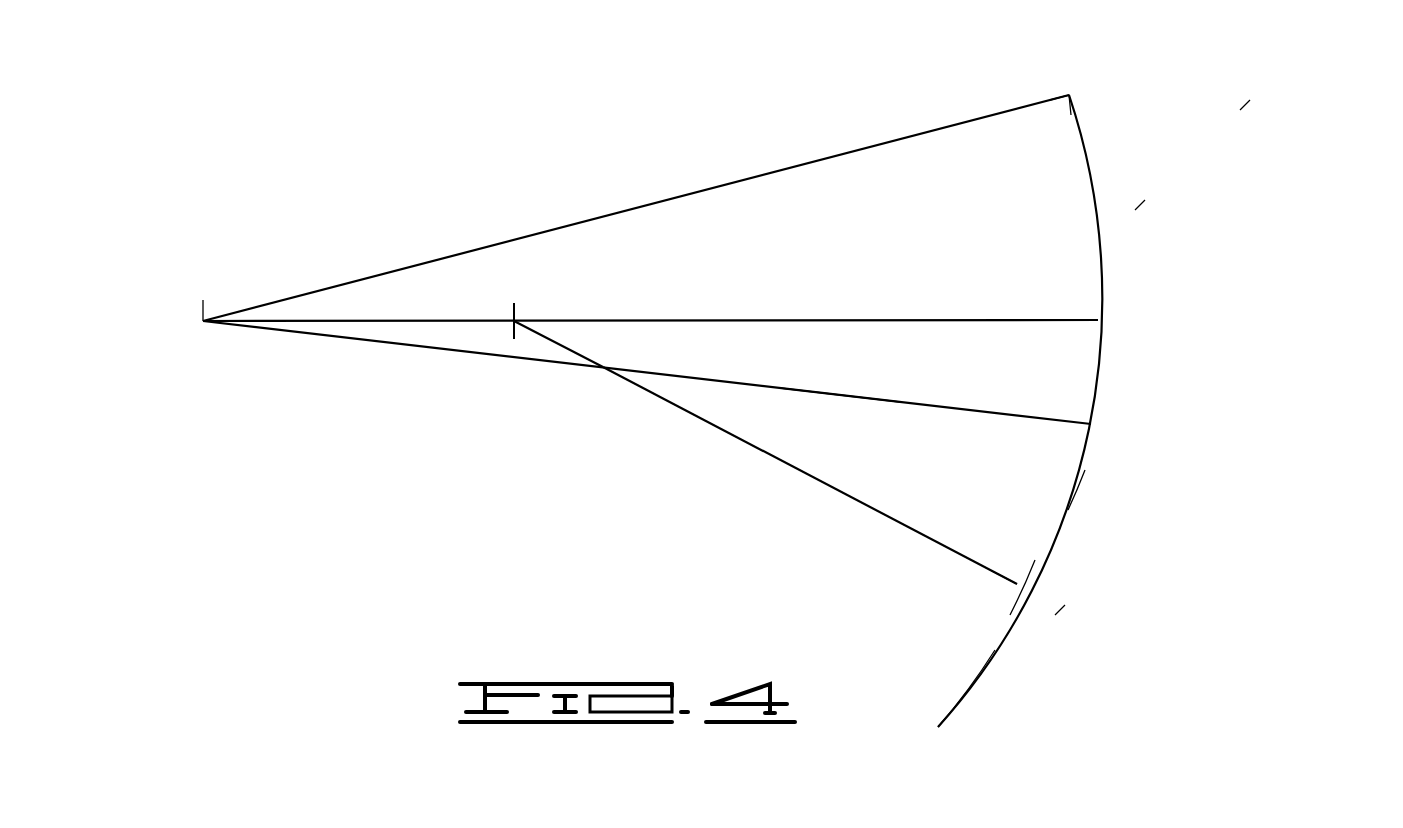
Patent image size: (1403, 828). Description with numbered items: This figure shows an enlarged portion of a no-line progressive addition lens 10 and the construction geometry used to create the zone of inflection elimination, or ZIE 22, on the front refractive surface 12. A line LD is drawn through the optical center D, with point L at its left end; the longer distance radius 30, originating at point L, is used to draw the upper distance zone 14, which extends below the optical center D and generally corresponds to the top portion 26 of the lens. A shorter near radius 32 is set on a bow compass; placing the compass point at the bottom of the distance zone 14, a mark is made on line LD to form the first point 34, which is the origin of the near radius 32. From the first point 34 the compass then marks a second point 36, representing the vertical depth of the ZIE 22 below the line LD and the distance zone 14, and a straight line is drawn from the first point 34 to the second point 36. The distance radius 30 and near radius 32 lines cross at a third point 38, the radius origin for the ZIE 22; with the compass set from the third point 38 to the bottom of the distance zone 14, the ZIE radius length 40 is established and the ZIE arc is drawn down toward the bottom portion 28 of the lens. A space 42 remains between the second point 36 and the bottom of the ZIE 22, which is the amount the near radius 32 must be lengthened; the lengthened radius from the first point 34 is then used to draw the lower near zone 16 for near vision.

The lens 10 is at (1248, 105).
The front refractive surface 12 is at (1143, 203).
The distance zone 14 is at (1083, 150).
The near zone 16 is at (982, 677).
The zone of inflection elimination 22 is at (1077, 490).
The top portion 26 is at (1082, 105).
The bottom portion 28 is at (1063, 610).
The distance radius 30 is at (533, 230).
The near radius 32 is at (767, 455).
The first point 34 is at (516, 318).
The second point 36 is at (1018, 580).
The third point 38 is at (603, 370).
The ZIE radius length 40 is at (837, 397).
The space 42 is at (1023, 592).
The point L is at (203, 321).
The optical center D is at (1098, 319).